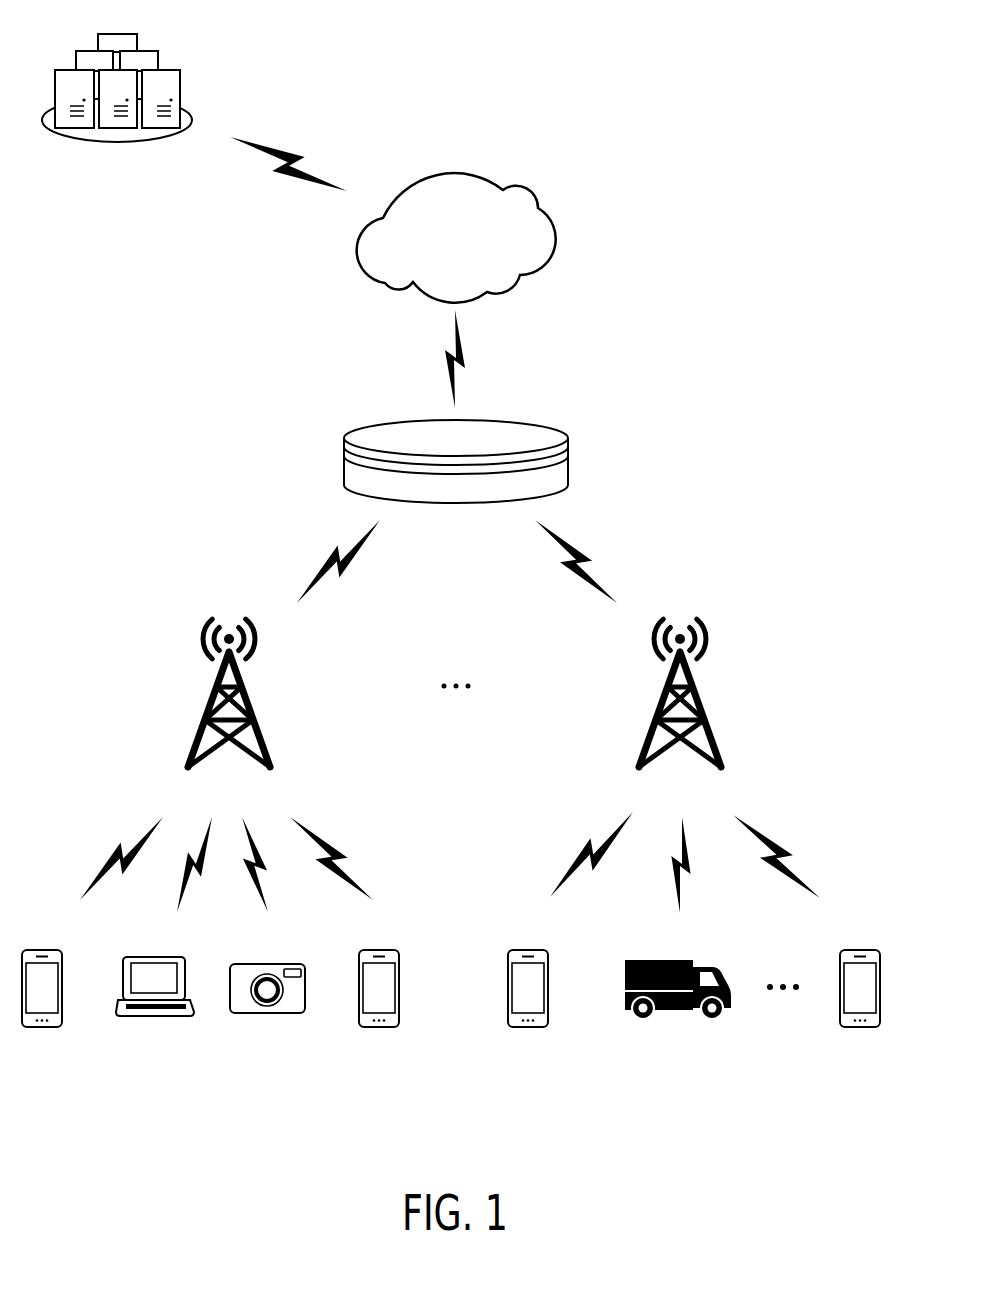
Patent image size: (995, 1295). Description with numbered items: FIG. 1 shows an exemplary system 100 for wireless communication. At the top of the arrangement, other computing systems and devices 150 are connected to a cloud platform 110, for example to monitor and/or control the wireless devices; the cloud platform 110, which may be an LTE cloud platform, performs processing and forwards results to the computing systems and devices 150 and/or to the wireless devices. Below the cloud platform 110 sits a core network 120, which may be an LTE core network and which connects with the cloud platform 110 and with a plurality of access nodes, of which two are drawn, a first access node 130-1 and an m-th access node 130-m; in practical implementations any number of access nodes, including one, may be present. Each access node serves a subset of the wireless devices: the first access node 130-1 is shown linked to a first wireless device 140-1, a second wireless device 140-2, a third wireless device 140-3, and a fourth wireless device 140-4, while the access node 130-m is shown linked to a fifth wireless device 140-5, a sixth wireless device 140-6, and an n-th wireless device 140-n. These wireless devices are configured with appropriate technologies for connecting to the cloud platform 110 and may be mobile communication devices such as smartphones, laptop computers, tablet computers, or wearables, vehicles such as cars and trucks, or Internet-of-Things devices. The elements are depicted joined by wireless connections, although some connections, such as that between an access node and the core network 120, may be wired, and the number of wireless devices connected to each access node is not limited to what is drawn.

The system 100 is at (708, 99).
The cloud platform 110 is at (568, 240).
The core network 120 is at (568, 443).
The access node 130-1 is at (258, 710).
The access node 130-m is at (707, 710).
The wireless device 140-1 is at (57, 1023).
The wireless device 140-2 is at (165, 1018).
The wireless device 140-3 is at (267, 1013).
The wireless device 140-4 is at (395, 1023).
The wireless device 140-5 is at (545, 1023).
The wireless device 140-6 is at (653, 1016).
The wireless device 140-n is at (875, 1023).
The computing systems and devices 150 is at (159, 60).